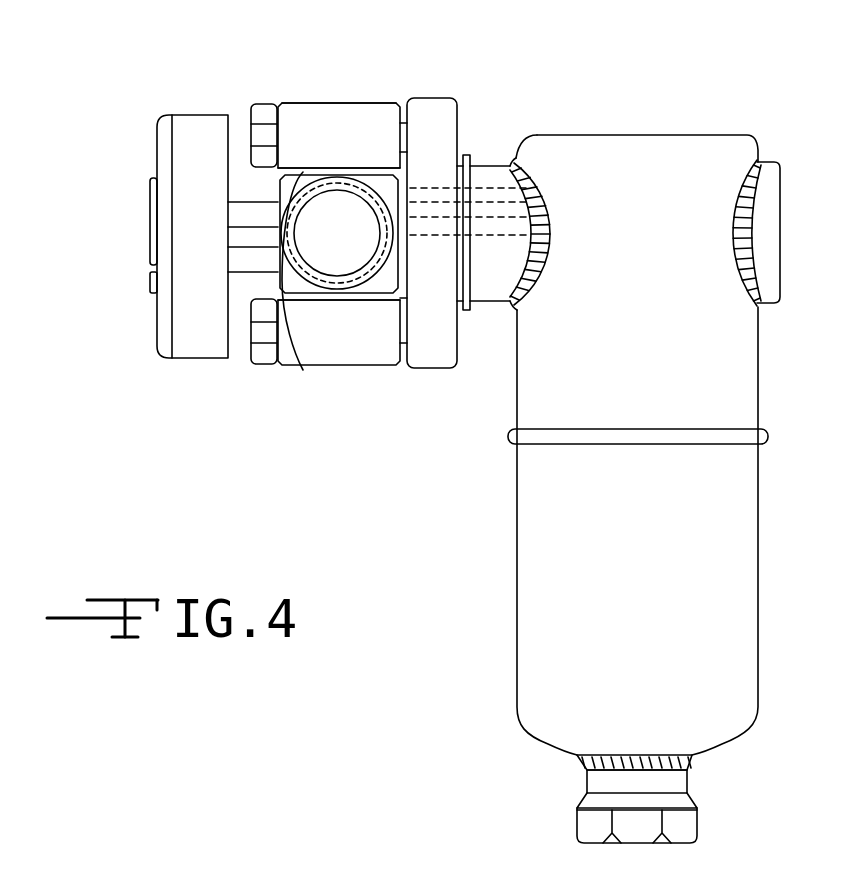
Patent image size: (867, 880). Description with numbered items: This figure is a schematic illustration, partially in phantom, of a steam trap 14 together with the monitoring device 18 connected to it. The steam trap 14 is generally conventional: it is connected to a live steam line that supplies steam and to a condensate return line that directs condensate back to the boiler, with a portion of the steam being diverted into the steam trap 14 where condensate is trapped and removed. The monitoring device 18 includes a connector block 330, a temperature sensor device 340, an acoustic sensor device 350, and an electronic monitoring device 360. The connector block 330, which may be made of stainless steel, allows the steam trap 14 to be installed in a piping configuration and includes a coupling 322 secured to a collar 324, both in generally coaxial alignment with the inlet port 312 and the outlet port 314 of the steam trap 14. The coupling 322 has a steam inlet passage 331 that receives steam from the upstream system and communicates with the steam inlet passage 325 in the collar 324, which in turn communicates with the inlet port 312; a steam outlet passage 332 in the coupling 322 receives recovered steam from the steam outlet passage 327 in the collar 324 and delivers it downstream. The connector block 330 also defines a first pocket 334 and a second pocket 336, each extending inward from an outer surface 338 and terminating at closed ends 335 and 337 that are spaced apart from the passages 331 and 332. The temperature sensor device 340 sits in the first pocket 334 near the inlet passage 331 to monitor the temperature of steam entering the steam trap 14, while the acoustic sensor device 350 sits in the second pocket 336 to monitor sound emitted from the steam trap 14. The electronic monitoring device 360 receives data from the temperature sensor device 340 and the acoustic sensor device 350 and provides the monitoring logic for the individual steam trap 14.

The steam trap 14 is at (515, 622).
The monitoring device 18 is at (350, 443).
The inlet port 312 is at (492, 237).
The outlet port 314 is at (490, 176).
The coupling 322 is at (358, 102).
The collar 324 is at (458, 122).
The steam inlet passage 325 is at (443, 240).
The steam outlet passage 327 is at (442, 197).
The connector block 330 is at (338, 104).
The steam inlet passage 331 is at (374, 305).
The steam outlet passage 332 is at (340, 266).
The first pocket 334 is at (285, 378).
The closed end 335 is at (303, 168).
The second pocket 336 is at (284, 340).
The closed end 337 is at (303, 370).
The outer surface 338 is at (277, 290).
The temperature sensor device 340 is at (240, 200).
The acoustic sensor device 350 is at (240, 200).
The electronic monitoring device 360 is at (155, 166).